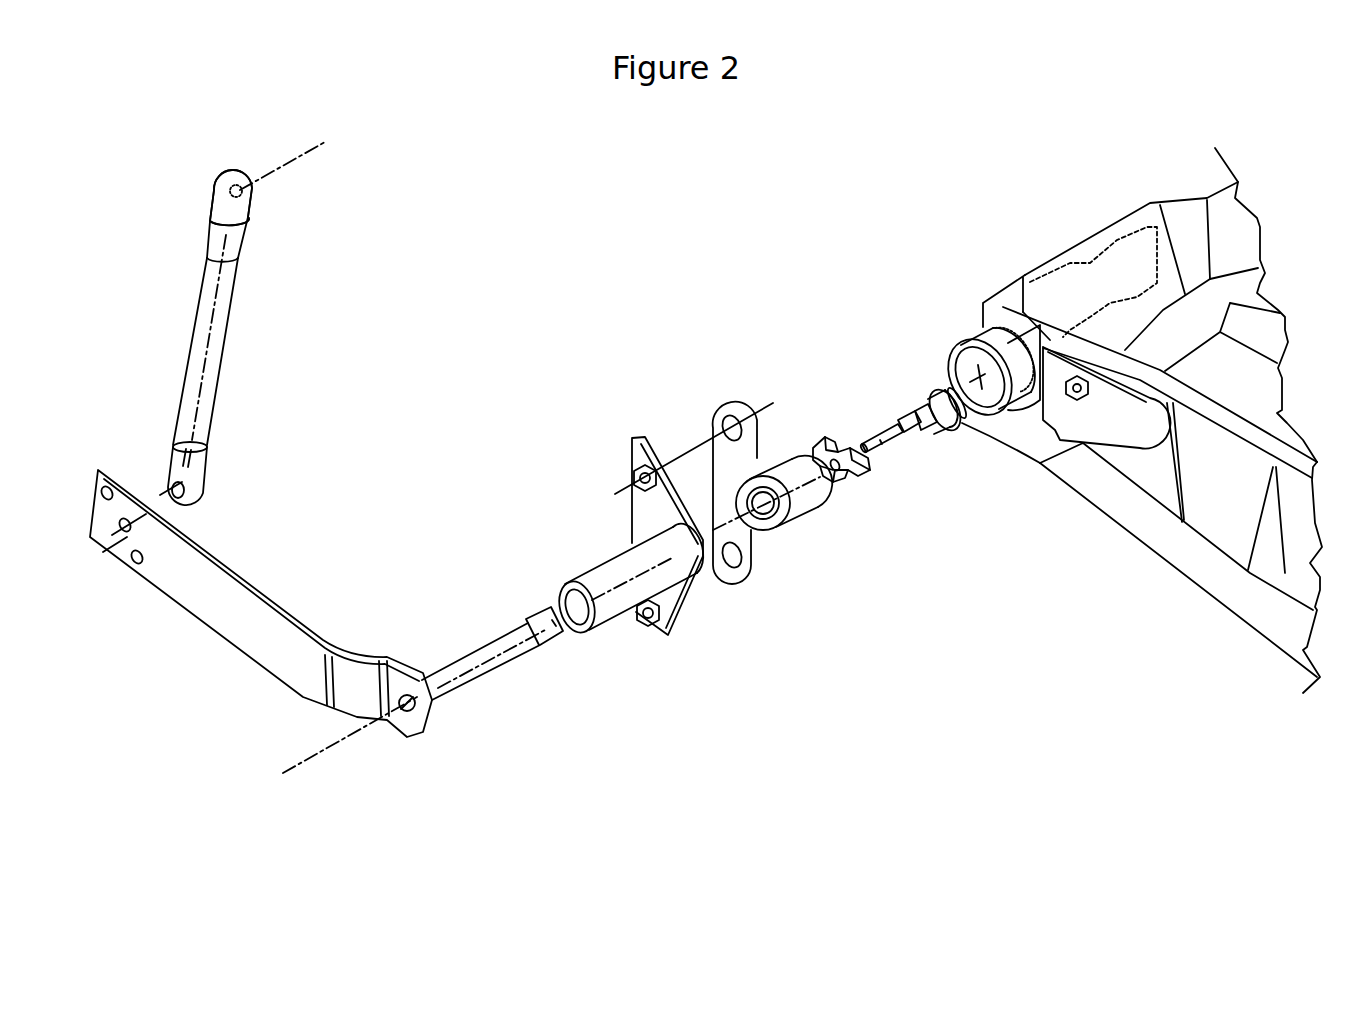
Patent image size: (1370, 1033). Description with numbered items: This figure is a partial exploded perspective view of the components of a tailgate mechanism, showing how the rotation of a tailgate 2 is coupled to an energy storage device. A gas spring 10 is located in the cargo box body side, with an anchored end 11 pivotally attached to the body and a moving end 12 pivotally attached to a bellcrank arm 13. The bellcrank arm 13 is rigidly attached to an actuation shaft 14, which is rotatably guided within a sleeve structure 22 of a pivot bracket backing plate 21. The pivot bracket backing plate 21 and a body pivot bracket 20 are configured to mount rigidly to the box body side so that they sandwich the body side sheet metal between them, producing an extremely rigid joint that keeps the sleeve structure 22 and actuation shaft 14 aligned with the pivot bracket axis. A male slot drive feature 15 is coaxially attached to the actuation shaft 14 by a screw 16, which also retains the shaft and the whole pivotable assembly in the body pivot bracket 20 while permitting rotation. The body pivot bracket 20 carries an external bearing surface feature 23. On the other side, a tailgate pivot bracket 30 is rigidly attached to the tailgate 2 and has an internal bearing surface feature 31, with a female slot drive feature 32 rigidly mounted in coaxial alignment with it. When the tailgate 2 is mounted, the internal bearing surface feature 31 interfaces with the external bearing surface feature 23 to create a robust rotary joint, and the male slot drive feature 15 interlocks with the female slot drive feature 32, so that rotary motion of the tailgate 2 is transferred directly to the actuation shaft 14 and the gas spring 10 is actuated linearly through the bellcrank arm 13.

The tailgate 2 is at (1213, 520).
The gas spring 10 is at (233, 188).
The anchored end 11 is at (231, 197).
The moving end 12 is at (213, 483).
The bellcrank arm 13 is at (217, 617).
The actuation shaft 14 is at (492, 636).
The male slot drive feature 15 is at (835, 382).
The screw 16 is at (880, 447).
The body pivot bracket 20 is at (747, 403).
The pivot bracket backing plate 21 is at (640, 443).
The sleeve structure 22 is at (613, 547).
The external bearing surface feature 23 is at (808, 506).
The tailgate pivot bracket 30 is at (1127, 430).
The internal bearing surface feature 31 is at (963, 428).
The female slot drive feature 32 is at (925, 390).